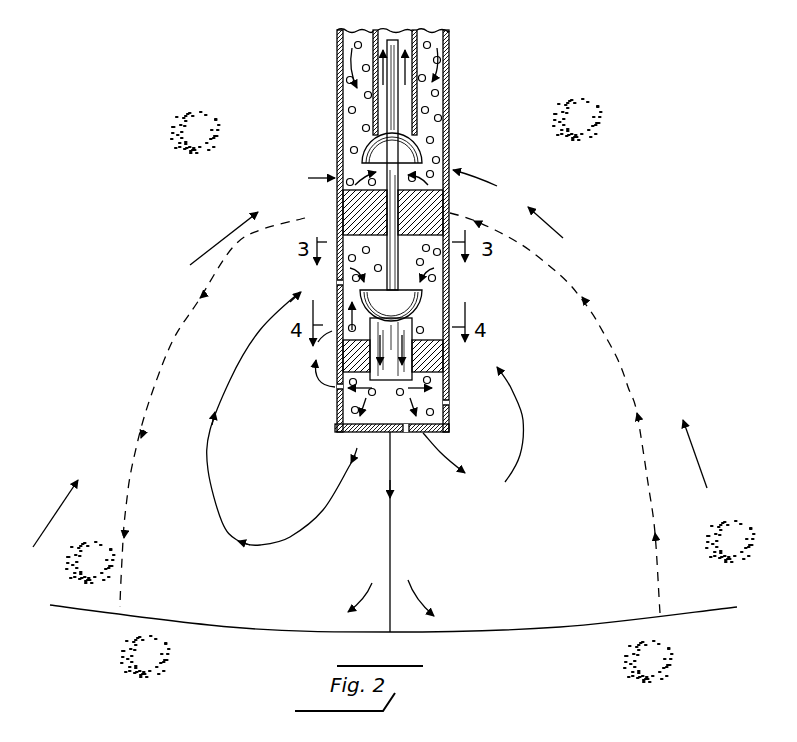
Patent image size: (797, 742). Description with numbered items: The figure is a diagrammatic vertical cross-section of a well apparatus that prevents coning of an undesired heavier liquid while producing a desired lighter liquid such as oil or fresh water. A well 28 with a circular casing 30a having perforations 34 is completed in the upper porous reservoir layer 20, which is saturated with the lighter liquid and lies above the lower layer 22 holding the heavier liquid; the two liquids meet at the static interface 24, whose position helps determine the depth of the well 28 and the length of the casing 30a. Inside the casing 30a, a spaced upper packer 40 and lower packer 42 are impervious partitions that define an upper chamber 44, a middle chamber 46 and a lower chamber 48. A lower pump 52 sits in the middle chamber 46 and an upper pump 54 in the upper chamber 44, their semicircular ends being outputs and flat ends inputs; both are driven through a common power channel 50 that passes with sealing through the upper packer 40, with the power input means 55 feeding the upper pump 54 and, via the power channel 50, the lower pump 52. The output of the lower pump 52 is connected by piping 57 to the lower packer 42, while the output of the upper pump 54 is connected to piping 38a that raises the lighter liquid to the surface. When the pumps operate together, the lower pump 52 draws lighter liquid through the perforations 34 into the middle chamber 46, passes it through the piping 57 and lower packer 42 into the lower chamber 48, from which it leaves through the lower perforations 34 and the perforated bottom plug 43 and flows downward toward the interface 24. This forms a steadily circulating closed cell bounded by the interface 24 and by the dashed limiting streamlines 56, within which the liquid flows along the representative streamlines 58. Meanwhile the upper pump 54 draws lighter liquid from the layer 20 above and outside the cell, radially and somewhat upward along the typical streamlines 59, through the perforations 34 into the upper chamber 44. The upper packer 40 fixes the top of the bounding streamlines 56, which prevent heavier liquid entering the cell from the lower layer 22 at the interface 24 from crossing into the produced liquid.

The upper porous reservoir layer 20 is at (410, 341).
The lower layer 22 is at (397, 659).
The static interface 24 is at (70, 601).
The well 28 is at (447, 116).
The circular casing 30a is at (338, 112).
The perforations 34 is at (337, 283).
The piping 38a is at (415, 44).
The upper packer 40 is at (430, 200).
The lower packer 42 is at (436, 360).
The bottom plug 43 is at (368, 433).
The upper chamber 44 is at (387, 172).
The middle chamber 46 is at (440, 320).
The lower chamber 48 is at (400, 414).
The power channel 50 is at (343, 232).
The lower pump 52 is at (404, 313).
The upper pump 54 is at (404, 160).
The power input means 55 is at (395, 106).
The limiting streamlines 56 is at (390, 413).
The piping 57 is at (422, 330).
The representative streamlines 58 is at (365, 418).
The typical streamlines 59 is at (373, 357).